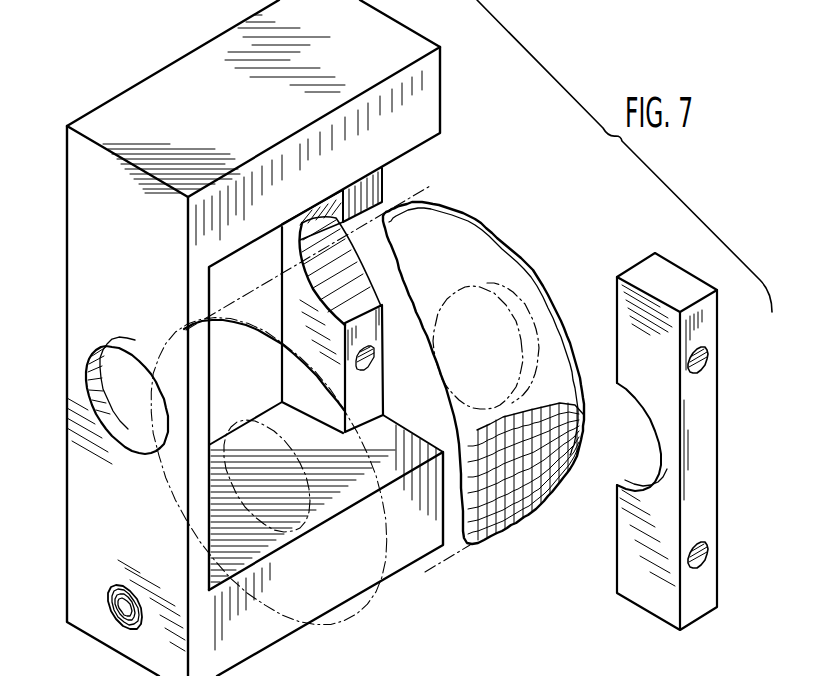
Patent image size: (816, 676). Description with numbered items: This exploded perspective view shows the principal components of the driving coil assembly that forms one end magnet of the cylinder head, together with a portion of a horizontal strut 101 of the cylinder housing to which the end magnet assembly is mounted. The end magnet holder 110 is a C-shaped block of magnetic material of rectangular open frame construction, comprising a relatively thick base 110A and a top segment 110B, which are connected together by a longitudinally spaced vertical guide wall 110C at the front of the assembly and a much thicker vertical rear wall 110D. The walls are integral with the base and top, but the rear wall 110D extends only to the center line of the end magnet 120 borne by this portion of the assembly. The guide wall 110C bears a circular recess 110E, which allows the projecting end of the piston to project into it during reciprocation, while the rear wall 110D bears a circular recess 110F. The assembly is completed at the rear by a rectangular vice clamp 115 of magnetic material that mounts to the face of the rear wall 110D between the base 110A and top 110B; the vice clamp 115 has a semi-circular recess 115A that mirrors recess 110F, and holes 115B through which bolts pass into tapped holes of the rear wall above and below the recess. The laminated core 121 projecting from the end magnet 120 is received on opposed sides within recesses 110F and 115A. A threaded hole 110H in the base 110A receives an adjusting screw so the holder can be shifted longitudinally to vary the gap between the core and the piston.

The horizontal strut 101 is at (478, 675).
The end magnet holder 110 is at (122, 85).
The base 110A is at (330, 577).
The top segment 110B is at (415, 108).
The vertical guide wall 110C is at (97, 277).
The vertical rear wall 110D is at (372, 185).
The circular recess 110E is at (83, 403).
The circular recess 110F is at (362, 297).
The threaded hole 110H is at (115, 623).
The vice clamp 115 is at (700, 462).
The semi-circular recess 115A is at (637, 477).
The holes 115B is at (705, 370).
The end magnet 120 is at (548, 370).
The laminated core 121 is at (507, 308).